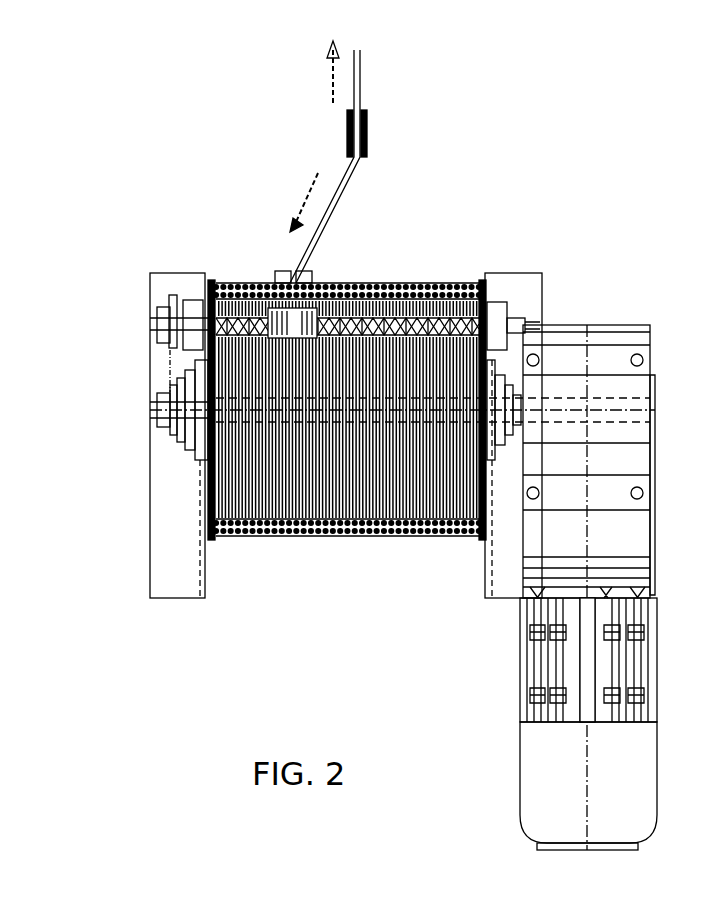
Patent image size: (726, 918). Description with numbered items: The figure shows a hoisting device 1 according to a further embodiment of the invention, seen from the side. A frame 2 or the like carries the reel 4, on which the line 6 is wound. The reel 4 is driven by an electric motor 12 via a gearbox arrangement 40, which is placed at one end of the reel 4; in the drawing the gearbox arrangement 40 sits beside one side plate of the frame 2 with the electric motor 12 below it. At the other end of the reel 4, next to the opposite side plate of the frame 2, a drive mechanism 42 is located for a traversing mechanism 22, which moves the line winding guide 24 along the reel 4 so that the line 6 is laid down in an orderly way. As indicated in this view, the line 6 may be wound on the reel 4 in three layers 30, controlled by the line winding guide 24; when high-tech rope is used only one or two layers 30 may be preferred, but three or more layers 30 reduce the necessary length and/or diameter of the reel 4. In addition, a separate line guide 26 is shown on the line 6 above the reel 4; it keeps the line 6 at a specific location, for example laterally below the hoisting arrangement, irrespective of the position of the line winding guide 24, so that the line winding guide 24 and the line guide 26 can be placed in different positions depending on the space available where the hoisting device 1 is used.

The hoisting device 1 is at (186, 190).
The frame 2 is at (511, 255).
The reel 4 is at (382, 363).
The line 6 is at (365, 103).
The electric motor 12 is at (522, 688).
The traversing mechanism 22 is at (377, 328).
The line winding guide 24 is at (306, 316).
The line guide 26 is at (347, 125).
The layers 30 is at (258, 547).
The gearbox arrangement 40 is at (566, 356).
The drive mechanism 42 is at (130, 409).